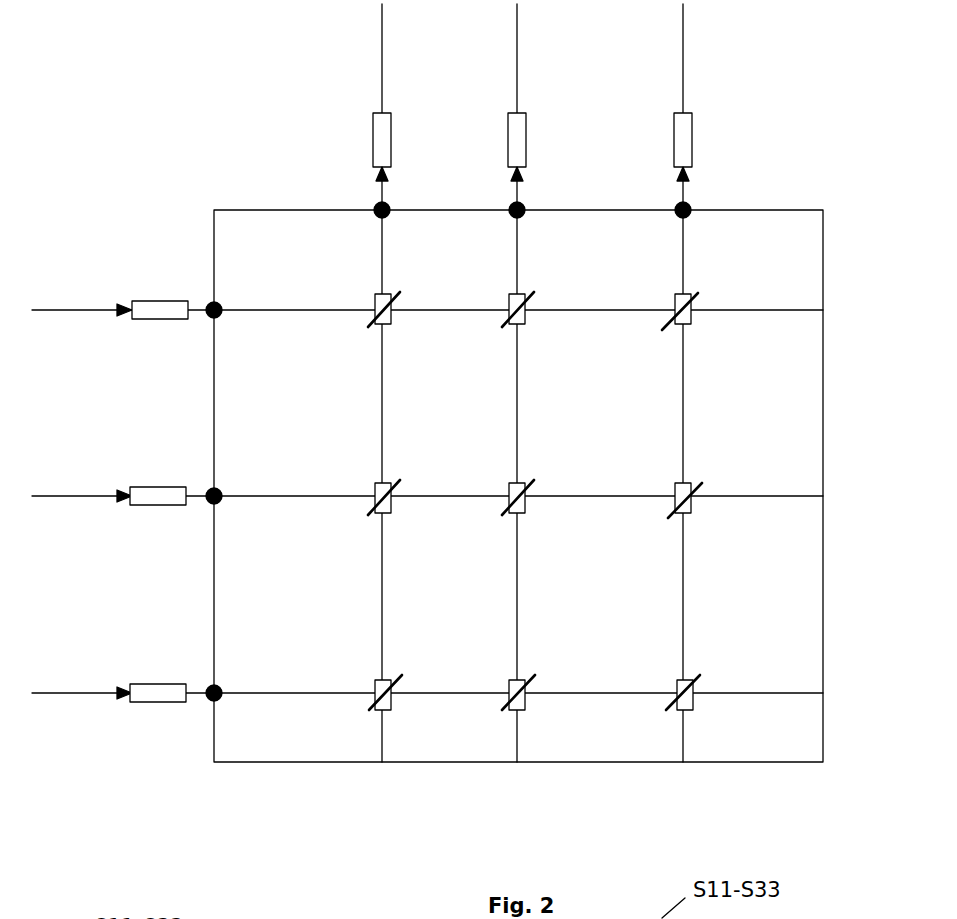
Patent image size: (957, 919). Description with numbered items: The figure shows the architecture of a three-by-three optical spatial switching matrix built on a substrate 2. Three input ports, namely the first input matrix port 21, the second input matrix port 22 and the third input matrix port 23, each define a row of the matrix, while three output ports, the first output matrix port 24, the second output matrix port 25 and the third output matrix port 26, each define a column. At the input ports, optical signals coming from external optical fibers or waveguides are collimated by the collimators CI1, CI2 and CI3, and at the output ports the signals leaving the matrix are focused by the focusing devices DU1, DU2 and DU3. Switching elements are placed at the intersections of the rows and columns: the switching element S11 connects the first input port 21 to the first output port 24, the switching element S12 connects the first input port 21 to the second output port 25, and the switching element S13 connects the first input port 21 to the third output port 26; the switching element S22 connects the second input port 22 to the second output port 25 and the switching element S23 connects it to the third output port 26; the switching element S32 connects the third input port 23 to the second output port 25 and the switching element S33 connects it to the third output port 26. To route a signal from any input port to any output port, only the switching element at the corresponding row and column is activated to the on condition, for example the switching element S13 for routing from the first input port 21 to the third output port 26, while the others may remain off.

The substrate 2 is at (795, 753).
The first input matrix port 21 is at (223, 305).
The second input matrix port 22 is at (224, 489).
The third input matrix port 23 is at (223, 687).
The first output matrix port 24 is at (390, 204).
The second output matrix port 25 is at (527, 204).
The third output matrix port 26 is at (692, 204).
The focusing device DU1 is at (378, 147).
The focusing device DU2 is at (513, 116).
The focusing device DU3 is at (683, 132).
The collimator CI1 is at (157, 313).
The collimator CI2 is at (157, 499).
The collimator CI3 is at (153, 697).
The switching element S11 is at (385, 325).
The switching element S12 is at (522, 325).
The switching element S13 is at (688, 325).
The switching element S22 is at (522, 514).
The switching element S23 is at (690, 514).
The switching element S32 is at (520, 710).
The switching element S33 is at (688, 710).